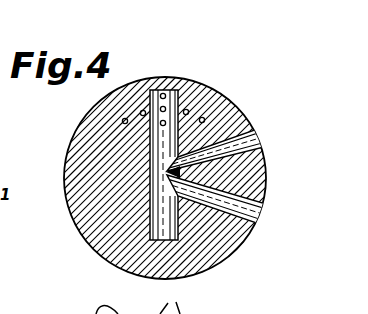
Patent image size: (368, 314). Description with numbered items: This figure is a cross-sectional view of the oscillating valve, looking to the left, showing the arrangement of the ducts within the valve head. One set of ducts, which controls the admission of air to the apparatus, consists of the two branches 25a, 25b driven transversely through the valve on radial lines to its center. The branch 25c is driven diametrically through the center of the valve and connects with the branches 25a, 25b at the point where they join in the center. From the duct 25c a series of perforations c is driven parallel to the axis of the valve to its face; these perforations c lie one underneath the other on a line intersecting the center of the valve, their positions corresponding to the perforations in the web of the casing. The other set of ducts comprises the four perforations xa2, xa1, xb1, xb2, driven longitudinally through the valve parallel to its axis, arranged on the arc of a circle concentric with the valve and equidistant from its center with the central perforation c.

The branch of the air admission duct 25a is at (261, 210).
The branch of the air admission duct 25b is at (259, 138).
The diametrical branch duct 25c is at (180, 239).
The perforations c is at (152, 88).
The perforation xb1 is at (143, 110).
The perforation xb2 is at (125, 118).
The perforation xa1 is at (187, 108).
The perforation xa2 is at (203, 117).